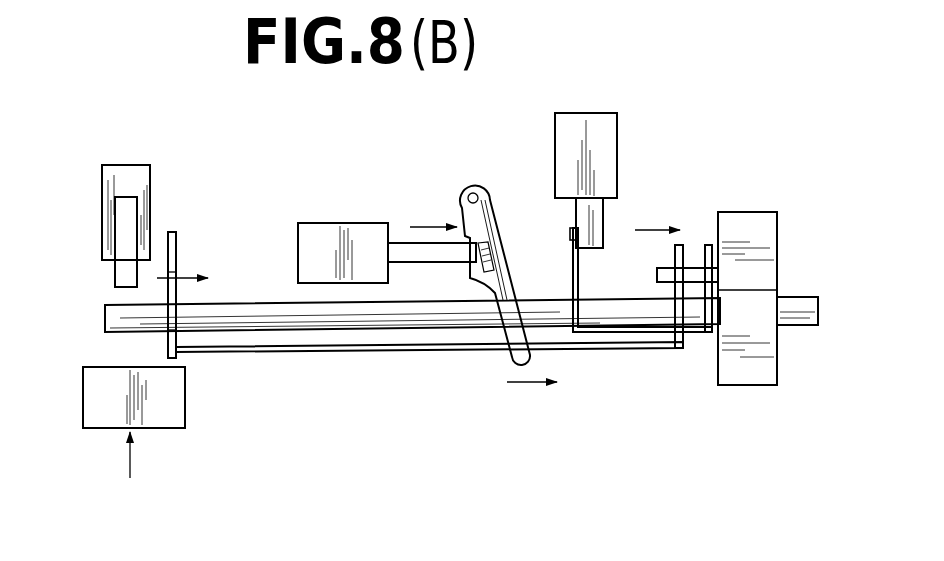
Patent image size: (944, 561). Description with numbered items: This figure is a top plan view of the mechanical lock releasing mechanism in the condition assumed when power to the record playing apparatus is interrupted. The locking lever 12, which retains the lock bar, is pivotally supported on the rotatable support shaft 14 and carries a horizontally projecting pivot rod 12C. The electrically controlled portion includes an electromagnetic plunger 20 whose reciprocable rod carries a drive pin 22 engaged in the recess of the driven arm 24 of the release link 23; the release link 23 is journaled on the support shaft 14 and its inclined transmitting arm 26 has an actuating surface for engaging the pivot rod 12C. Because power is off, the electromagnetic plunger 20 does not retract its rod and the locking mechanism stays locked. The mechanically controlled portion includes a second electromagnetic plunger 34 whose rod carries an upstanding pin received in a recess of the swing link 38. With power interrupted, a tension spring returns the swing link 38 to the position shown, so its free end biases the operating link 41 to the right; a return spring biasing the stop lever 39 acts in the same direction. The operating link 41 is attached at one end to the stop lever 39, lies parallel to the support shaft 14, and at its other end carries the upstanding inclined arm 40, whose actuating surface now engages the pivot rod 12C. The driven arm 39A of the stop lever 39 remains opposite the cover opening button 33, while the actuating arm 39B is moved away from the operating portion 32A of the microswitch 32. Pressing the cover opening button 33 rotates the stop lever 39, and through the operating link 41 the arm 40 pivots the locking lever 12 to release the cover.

The locking lever 12 is at (768, 219).
The pivot rod 12C is at (692, 268).
The support shaft 14 is at (808, 328).
The electromagnetic plunger 20 is at (612, 130).
The drive pin 22 is at (571, 234).
The release link 23 is at (637, 331).
The driven arm 24 is at (573, 293).
The transmitting arm 26 is at (708, 268).
The microswitch 32 is at (119, 176).
The operating portion 32A is at (130, 213).
The cover opening button 33 is at (176, 418).
The electromagnetic plunger 34 is at (375, 227).
The swing link 38 is at (503, 272).
The stop lever 39 is at (178, 296).
The driven arm 39A is at (175, 358).
The actuating arm 39B is at (173, 232).
The arm 40 is at (675, 257).
The operating link 41 is at (344, 352).